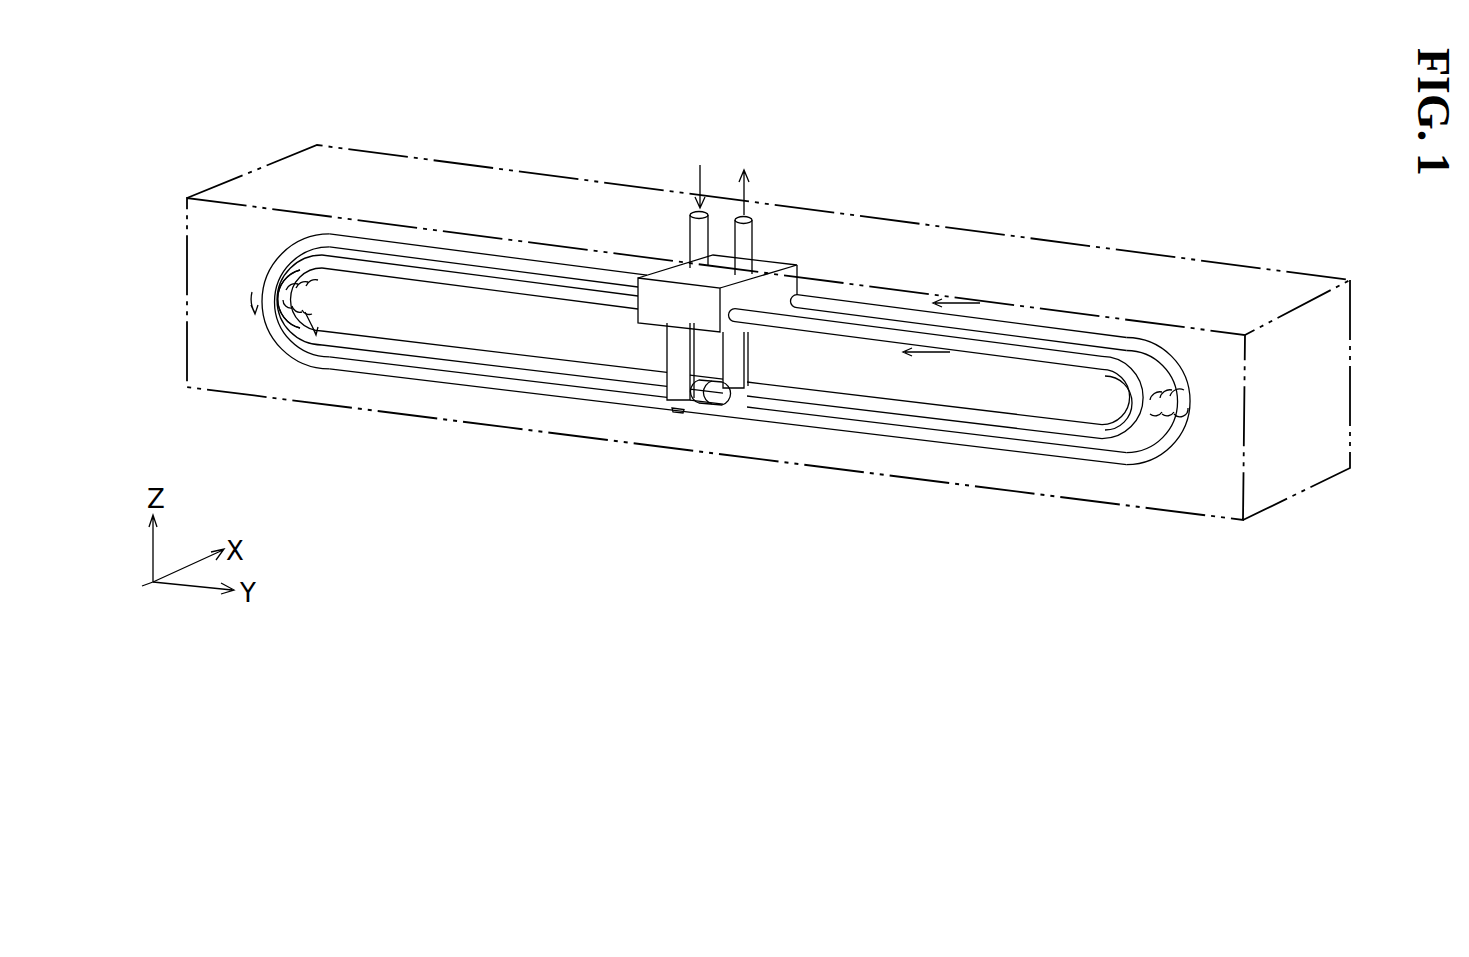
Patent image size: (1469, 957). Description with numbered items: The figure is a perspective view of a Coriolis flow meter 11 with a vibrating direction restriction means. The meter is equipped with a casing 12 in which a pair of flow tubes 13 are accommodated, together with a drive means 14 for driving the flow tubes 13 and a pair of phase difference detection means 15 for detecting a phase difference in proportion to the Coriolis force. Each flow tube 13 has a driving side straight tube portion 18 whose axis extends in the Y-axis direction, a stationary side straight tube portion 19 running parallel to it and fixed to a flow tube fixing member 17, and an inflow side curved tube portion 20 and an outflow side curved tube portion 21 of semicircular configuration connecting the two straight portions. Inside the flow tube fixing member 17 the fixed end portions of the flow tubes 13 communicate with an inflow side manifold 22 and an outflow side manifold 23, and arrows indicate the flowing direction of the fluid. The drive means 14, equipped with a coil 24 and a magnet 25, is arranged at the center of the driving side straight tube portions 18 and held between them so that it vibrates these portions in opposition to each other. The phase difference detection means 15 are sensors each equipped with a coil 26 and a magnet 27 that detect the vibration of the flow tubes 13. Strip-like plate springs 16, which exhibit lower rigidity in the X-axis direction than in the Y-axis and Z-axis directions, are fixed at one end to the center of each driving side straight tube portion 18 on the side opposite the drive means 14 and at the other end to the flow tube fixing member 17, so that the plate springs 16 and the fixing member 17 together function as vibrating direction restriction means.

The Coriolis flow meter 11 is at (958, 104).
The casing 12 is at (1000, 240).
The flow tube 13 is at (444, 364).
The drive means 14 is at (709, 420).
The phase difference detection means 15 is at (257, 328).
The plate spring 16 is at (672, 352).
The flow tube fixing member 17 is at (788, 280).
The driving side straight tube portion 18 is at (923, 413).
The stationary side straight tube portion 19 is at (522, 290).
The inflow side curved tube portion 20 is at (325, 252).
The outflow side curved tube portion 21 is at (1153, 440).
The inflow side manifold 22 is at (698, 231).
The outflow side manifold 23 is at (746, 240).
The coil 24 is at (740, 386).
The magnet 25 is at (678, 410).
The coil 26 is at (290, 338).
The magnet 27 is at (312, 294).